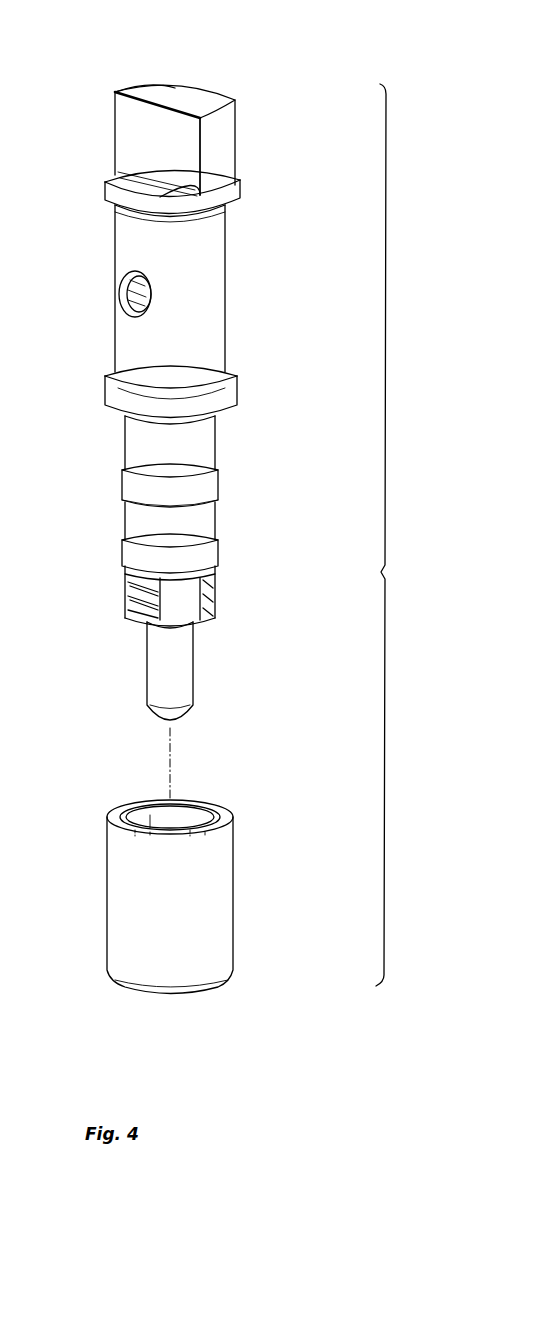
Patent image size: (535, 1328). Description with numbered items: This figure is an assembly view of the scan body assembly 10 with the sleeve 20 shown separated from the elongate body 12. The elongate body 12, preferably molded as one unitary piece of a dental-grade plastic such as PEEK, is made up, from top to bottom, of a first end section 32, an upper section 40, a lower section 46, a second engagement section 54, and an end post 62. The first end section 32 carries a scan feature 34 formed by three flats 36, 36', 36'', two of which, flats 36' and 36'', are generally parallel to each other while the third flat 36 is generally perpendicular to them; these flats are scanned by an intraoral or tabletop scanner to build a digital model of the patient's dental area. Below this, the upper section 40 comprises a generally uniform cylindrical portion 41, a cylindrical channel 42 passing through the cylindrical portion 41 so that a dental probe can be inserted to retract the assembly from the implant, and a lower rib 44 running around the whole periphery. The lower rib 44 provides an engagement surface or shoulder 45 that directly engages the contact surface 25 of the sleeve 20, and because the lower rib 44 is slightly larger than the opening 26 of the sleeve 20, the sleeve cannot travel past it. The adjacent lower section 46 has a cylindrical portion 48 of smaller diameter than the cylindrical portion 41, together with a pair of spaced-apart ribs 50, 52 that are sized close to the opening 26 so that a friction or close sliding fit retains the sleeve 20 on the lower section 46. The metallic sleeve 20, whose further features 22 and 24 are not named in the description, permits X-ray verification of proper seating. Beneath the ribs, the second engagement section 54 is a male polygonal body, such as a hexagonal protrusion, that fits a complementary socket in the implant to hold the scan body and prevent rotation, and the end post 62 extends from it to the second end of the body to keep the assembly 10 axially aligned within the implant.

The scan body assembly 10 is at (395, 535).
The elongate body 12 is at (300, 273).
The sleeve 20 is at (286, 865).
The bore / receptacle 22 is at (200, 789).
The bottom end of receptacle 24 is at (200, 1012).
The contact surface 25 is at (226, 814).
The opening 26 is at (151, 820).
The first end section 32 is at (80, 90).
The scan feature 34 is at (170, 100).
The flat 36 is at (227, 156).
The flat 36' is at (194, 191).
The flat 36'' is at (205, 75).
The upper section 40 is at (80, 206).
The cylindrical portion 41 is at (198, 258).
The cylindrical channel 42 is at (135, 298).
The lower rib 44 is at (222, 398).
The shoulder 45 is at (225, 418).
The lower section 46 is at (80, 411).
The cylindrical portion 48 is at (188, 450).
The rib 50 is at (205, 484).
The rib 52 is at (205, 556).
The second engagement section 54 is at (104, 600).
The end post 62 is at (180, 672).